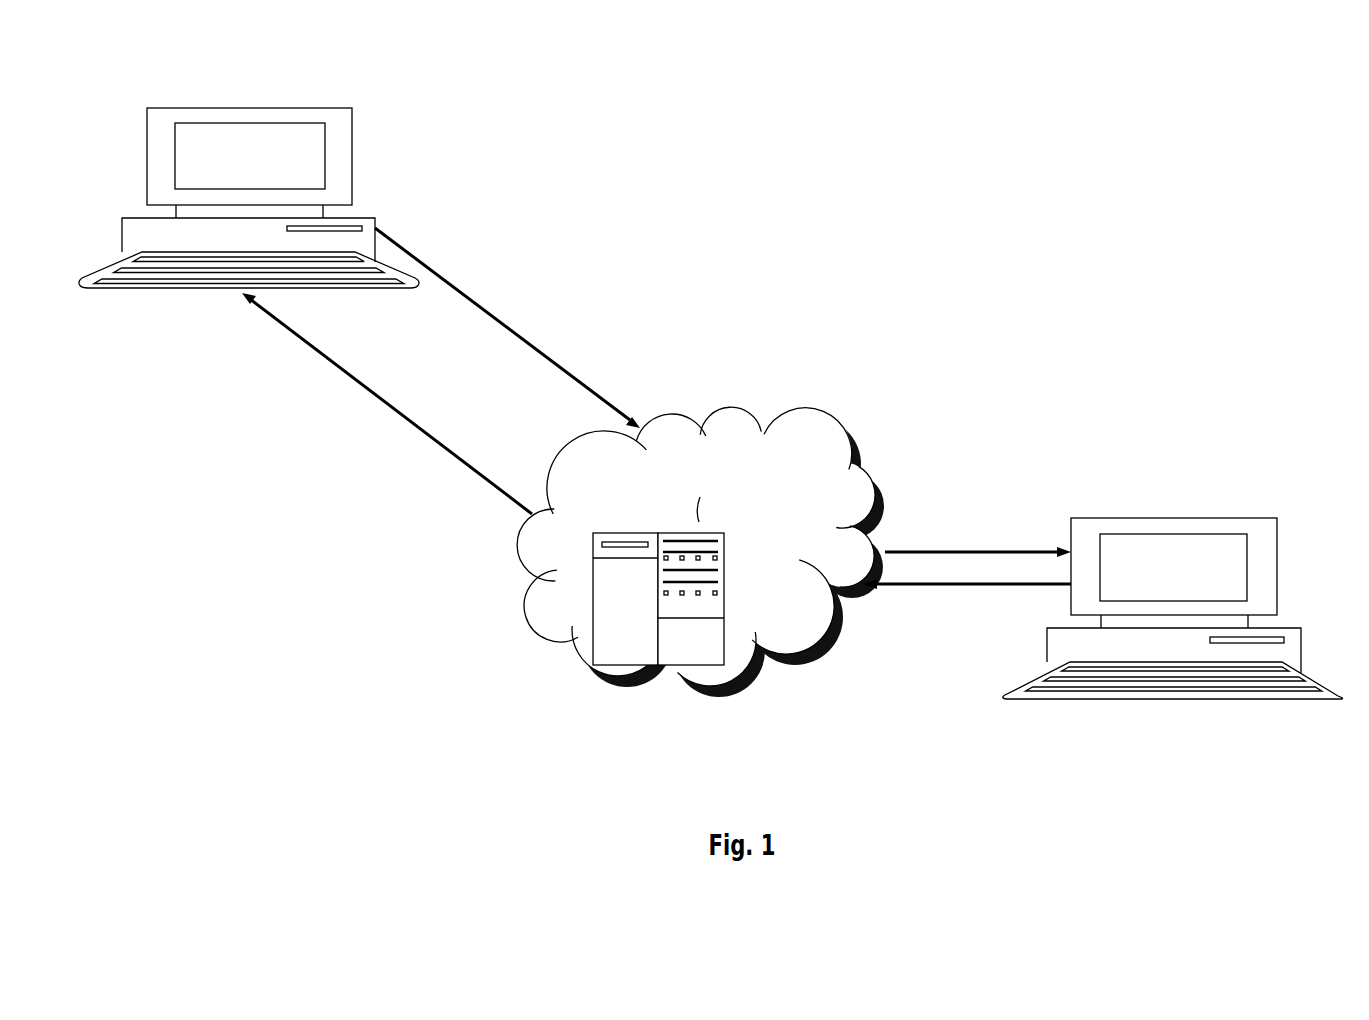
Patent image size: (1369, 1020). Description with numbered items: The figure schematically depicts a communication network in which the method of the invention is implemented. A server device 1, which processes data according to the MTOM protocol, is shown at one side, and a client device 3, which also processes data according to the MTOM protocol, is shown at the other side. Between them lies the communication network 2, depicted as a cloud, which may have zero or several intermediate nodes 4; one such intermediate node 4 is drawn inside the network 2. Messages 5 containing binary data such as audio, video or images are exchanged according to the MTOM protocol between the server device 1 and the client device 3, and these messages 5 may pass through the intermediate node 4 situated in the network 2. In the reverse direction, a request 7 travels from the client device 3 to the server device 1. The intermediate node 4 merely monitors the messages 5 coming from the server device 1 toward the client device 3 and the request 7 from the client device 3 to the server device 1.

The server device 1 is at (267, 108).
The communication network 2 is at (747, 407).
The client device 3 is at (1117, 518).
The intermediate node 4 is at (573, 635).
The message 5 is at (517, 335).
The request 7 is at (393, 410).